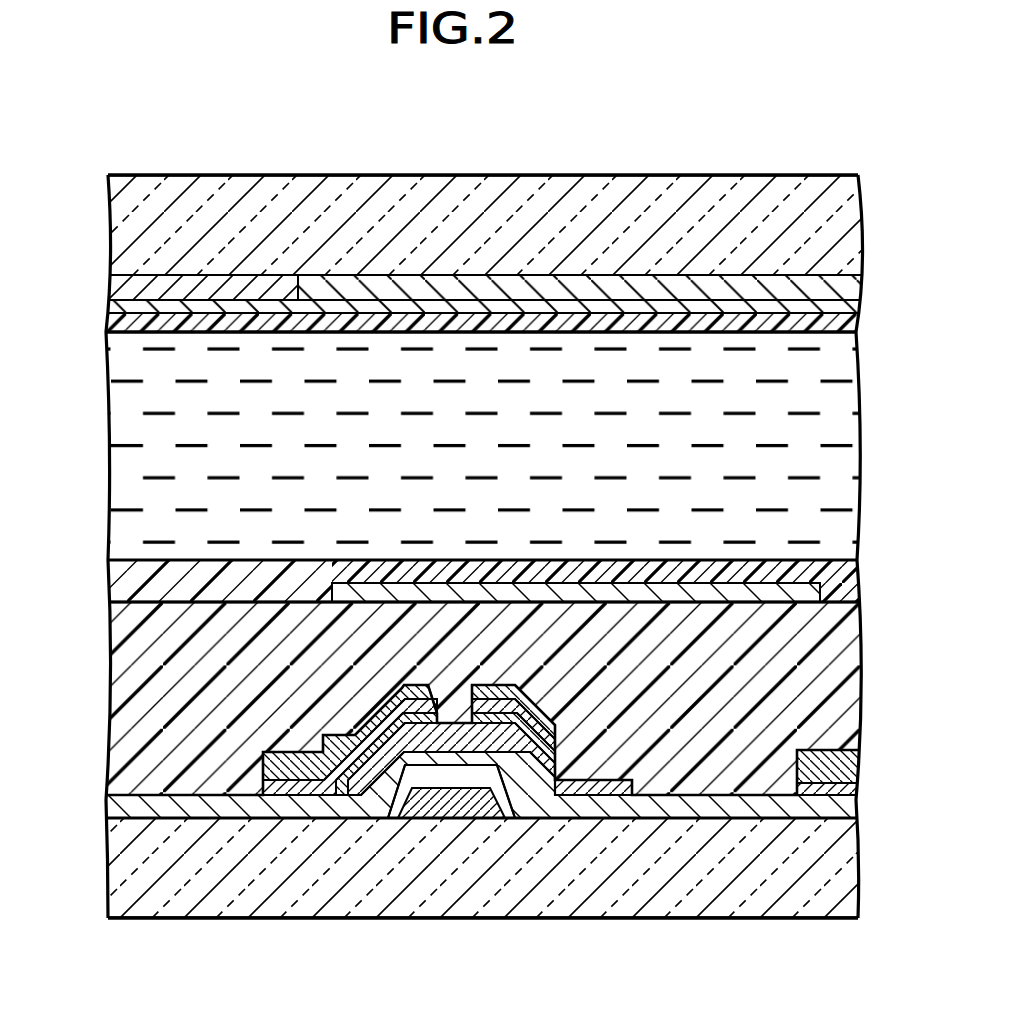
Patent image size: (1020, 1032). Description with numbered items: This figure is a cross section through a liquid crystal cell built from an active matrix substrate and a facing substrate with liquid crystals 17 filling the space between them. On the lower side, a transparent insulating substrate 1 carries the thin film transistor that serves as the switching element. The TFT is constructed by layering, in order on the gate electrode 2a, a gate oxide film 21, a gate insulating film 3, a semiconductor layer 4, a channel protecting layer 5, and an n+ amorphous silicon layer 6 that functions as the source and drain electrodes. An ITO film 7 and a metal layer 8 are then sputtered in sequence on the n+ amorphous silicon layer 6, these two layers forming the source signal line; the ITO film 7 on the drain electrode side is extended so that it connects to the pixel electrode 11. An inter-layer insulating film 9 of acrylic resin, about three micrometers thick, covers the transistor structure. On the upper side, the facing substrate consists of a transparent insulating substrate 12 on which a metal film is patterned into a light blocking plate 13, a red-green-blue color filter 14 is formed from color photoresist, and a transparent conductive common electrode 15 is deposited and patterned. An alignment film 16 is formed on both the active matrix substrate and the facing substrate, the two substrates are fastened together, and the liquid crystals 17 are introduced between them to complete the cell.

The transparent insulating substrate 1 is at (790, 905).
The gate electrode 2a is at (455, 805).
The gate insulating film 3 is at (165, 808).
The semiconductor layer 4 is at (388, 760).
The channel protecting layer 5 is at (500, 718).
The n+ amorphous silicon layer 6 is at (348, 774).
The ITO film 7 is at (268, 786).
The metal layer 8 is at (300, 765).
The inter-layer insulating film 9 is at (825, 690).
The pixel electrode 11 is at (828, 592).
The transparent insulating substrate 12 is at (650, 215).
The light blocking plate 13 is at (243, 290).
The red-green-blue color filter 14 is at (513, 290).
The common electrode 15 is at (840, 313).
The alignment film 16 is at (832, 328).
The liquid crystals 17 is at (125, 375).
The gate oxide film 21 is at (399, 803).